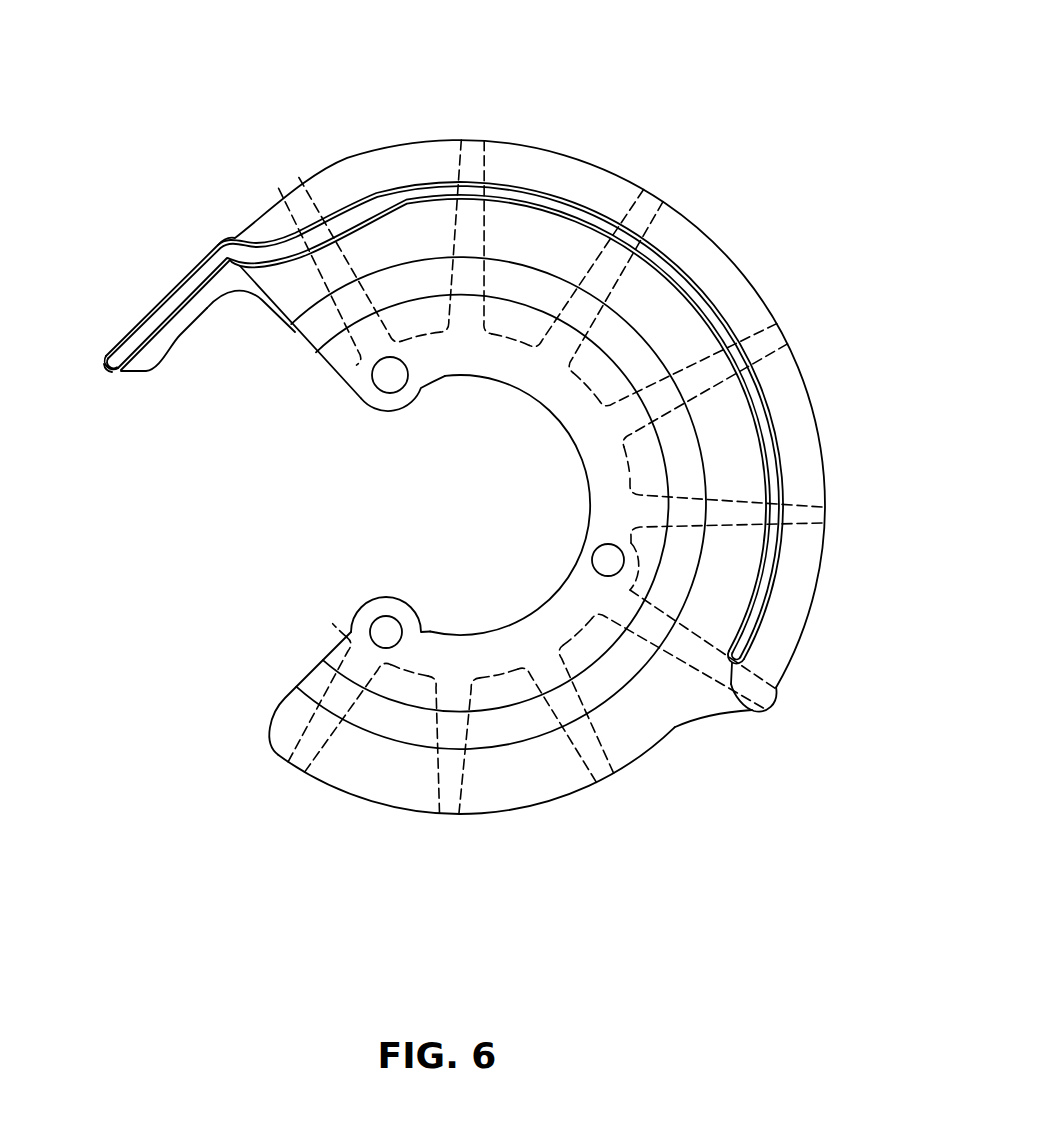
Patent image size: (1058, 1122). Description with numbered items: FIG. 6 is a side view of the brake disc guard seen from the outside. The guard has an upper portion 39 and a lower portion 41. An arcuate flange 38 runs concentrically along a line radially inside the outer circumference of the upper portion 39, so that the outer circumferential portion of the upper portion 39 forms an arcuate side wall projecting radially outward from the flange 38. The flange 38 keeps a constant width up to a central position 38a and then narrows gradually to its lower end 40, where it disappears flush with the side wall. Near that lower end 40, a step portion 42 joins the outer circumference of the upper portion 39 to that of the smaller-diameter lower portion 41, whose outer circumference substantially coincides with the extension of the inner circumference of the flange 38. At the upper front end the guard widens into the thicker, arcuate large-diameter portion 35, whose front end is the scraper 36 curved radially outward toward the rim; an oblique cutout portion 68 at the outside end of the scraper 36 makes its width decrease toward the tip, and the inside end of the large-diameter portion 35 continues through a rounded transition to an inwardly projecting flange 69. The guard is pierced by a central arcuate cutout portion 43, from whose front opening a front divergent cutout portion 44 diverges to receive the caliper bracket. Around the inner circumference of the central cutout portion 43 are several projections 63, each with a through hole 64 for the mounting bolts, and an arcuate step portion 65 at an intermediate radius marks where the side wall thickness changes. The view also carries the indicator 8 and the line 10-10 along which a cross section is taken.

The section line 8- 8 is at (266, 870).
The line 10- 10 is at (176, 337).
The large-diameter portion 35 is at (170, 295).
The scraper 36 is at (110, 360).
The flange 38 is at (557, 191).
The central position 38a is at (713, 300).
The upper portion 39 is at (389, 163).
The lower end 40 is at (755, 712).
The lower portion 41 is at (530, 792).
The step portion 42 is at (715, 722).
The central arcuate cutout portion 43 is at (545, 408).
The front divergent cutout portion 44 is at (328, 372).
The projections 63 is at (373, 411).
The through holes 64 is at (395, 383).
The arcuate step portion 65 is at (628, 345).
The cutout portion 68 is at (121, 372).
The flange 69 is at (174, 345).